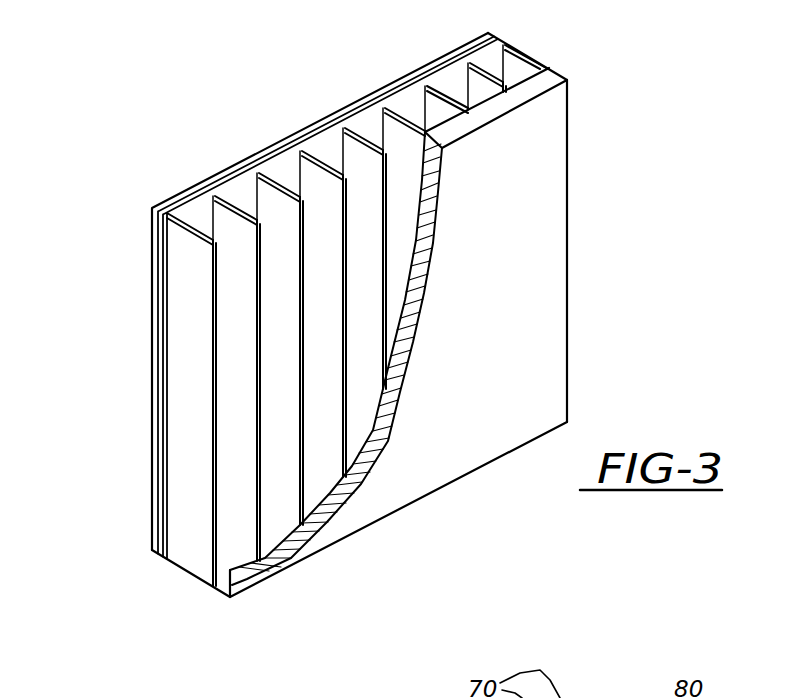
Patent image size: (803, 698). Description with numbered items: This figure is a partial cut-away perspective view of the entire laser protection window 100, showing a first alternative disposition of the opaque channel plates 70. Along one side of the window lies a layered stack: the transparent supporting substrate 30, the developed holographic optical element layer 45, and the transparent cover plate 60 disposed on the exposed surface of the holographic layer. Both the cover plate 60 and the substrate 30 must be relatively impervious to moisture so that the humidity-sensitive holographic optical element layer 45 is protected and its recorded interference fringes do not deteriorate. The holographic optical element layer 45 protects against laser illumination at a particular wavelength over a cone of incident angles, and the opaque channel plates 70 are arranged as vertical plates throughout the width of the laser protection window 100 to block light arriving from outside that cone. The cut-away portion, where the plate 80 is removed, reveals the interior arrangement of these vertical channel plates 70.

The laser protection window 100 is at (577, 290).
The front cover plate 80 is at (553, 137).
The opaque channel plates 70 is at (350, 143).
The transparent cover plate 60 is at (152, 556).
The holographic optical element layer 45 is at (158, 560).
The transparent supporting substrate 30 is at (165, 563).